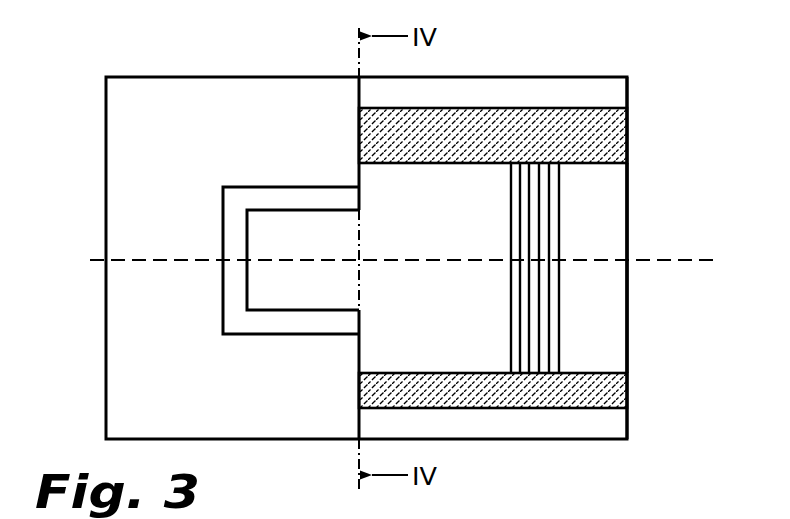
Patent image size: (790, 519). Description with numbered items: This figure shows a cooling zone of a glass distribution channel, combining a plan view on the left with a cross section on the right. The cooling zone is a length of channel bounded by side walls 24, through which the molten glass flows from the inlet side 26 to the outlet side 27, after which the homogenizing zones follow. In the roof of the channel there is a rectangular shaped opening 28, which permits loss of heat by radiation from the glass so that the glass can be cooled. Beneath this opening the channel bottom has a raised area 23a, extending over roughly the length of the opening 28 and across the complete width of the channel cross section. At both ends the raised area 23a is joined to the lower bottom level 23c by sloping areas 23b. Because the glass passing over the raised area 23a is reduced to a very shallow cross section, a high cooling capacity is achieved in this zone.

The raised area 23a is at (456, 245).
The sloping areas 23b is at (566, 157).
The lower bottom level 23c is at (603, 226).
The side walls 24 is at (556, 93).
The inlet side 26 is at (106, 333).
The outlet side 27 is at (628, 310).
The rectangular shaped opening 28 is at (320, 252).